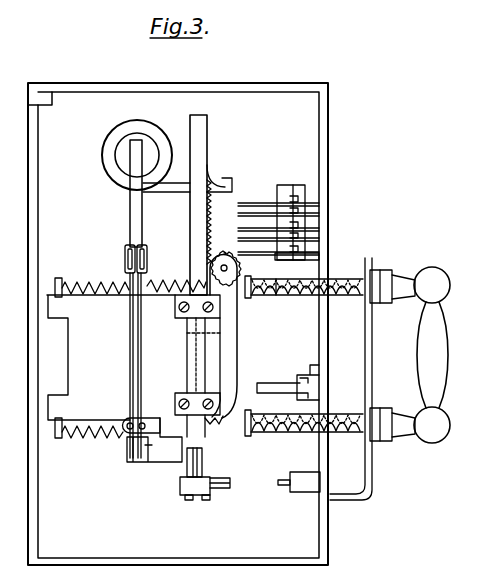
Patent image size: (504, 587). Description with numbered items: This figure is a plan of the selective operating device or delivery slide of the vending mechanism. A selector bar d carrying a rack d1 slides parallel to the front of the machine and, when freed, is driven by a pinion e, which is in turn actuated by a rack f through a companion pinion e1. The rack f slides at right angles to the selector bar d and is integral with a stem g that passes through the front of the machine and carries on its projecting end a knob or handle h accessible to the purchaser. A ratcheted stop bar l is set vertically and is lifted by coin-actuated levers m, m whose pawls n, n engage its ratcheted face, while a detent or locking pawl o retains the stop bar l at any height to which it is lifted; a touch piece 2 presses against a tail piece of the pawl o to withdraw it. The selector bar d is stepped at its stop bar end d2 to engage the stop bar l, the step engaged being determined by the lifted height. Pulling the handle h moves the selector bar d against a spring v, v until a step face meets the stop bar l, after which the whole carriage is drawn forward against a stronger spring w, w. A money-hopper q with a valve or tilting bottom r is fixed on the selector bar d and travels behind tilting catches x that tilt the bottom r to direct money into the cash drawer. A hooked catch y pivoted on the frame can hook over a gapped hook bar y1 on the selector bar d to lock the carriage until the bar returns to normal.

The money-hopper q is at (102, 148).
The valve or tilting bottom r is at (122, 160).
The selector bar d is at (207, 137).
The rack d1 is at (219, 222).
The pinion e is at (238, 266).
The companion pinion e1 is at (253, 288).
The rack f is at (200, 280).
The spring v is at (95, 360).
The stem g is at (285, 298).
The spring w is at (338, 283).
The knob or handle h is at (440, 352).
The coin-actuated lever m is at (150, 330).
The tilting catch x is at (252, 203).
The hook bar y1 is at (232, 340).
The hooked catch y is at (272, 390).
The stop bar end d2 is at (196, 424).
The pawl n is at (188, 461).
The stop bar l is at (182, 485).
The detent or locking pawl o is at (232, 485).
The touch piece 2 is at (300, 492).